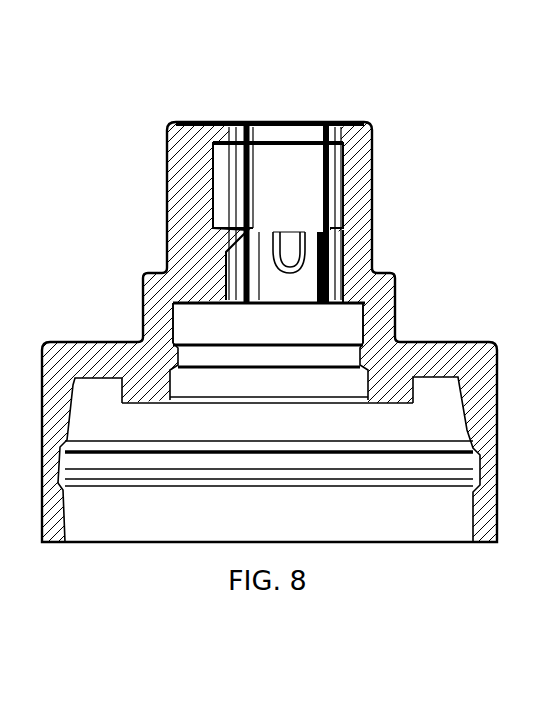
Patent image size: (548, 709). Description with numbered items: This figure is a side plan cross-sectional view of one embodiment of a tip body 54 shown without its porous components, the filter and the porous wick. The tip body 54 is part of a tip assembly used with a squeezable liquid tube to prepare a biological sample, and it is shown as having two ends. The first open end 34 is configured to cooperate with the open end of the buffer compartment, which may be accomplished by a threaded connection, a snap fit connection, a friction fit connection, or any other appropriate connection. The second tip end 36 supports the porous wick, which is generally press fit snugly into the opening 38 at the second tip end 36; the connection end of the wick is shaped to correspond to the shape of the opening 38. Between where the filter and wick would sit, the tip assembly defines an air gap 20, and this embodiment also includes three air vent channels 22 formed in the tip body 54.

The air gap 20 is at (288, 283).
The air vent channel 22 is at (242, 168).
The first open end 34 is at (183, 517).
The second tip end 36 is at (370, 142).
The opening 38 is at (243, 122).
The tip body 54 is at (464, 157).